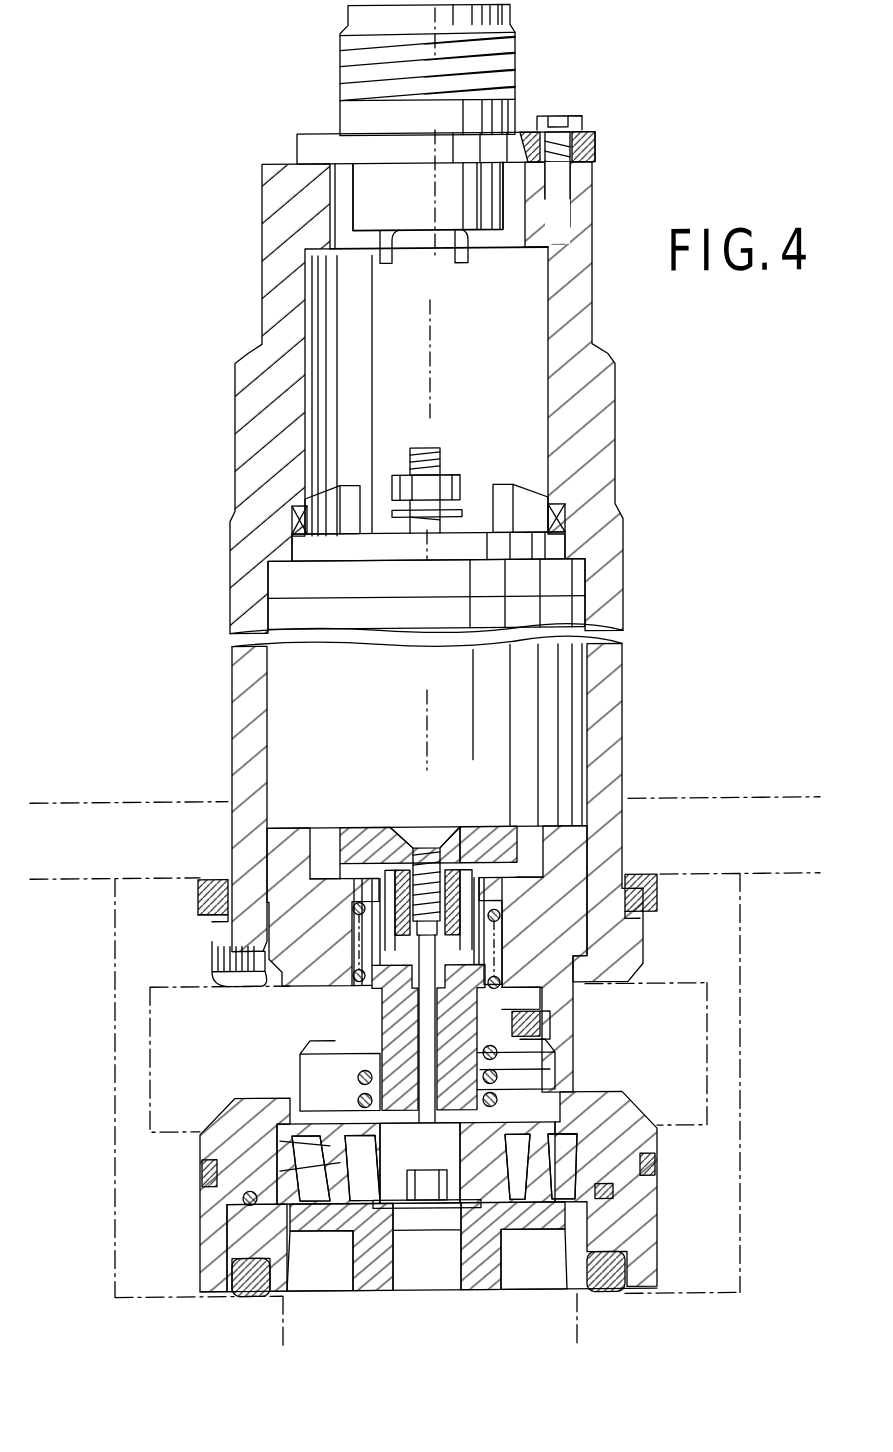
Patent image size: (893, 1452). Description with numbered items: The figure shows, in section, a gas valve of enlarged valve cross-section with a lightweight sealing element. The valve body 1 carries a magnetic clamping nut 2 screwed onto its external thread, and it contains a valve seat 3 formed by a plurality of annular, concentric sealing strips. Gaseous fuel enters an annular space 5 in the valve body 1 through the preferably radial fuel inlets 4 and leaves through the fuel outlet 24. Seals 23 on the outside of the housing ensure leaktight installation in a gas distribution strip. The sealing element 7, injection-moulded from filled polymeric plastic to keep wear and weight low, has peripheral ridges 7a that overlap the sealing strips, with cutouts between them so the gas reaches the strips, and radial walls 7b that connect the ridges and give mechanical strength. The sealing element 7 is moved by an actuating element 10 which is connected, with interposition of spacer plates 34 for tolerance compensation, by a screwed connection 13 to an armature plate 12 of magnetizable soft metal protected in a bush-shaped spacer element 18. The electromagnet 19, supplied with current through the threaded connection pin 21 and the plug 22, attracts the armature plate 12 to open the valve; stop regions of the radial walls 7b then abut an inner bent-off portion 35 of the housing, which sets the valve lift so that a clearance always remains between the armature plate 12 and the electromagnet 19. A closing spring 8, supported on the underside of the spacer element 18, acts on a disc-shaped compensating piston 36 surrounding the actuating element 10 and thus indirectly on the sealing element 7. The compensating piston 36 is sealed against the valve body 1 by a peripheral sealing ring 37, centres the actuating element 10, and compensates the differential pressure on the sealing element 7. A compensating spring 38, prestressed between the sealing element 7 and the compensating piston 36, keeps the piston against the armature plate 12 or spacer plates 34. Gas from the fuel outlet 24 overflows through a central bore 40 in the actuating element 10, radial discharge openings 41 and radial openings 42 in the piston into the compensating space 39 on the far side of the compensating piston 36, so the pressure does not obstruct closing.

The valve body 1 is at (640, 1220).
The magnetic clamping nut 2 is at (615, 460).
The valve seat 3 is at (375, 1285).
The fuel inlets 4 is at (295, 1062).
The annular space 5 is at (530, 1077).
The sealing element 7 is at (480, 1137).
The peripheral ridges 7a is at (280, 1170).
The radial walls 7b is at (320, 1143).
The closing spring 8 is at (500, 917).
The actuating element 10 is at (395, 1195).
The armature plate 12 is at (355, 848).
The screwed connection 13 is at (425, 848).
The spacer element 18 is at (285, 850).
The electromagnet 19 is at (262, 612).
The threaded connection pin 21 is at (444, 462).
The plug 22 is at (510, 42).
The seals 23 is at (640, 872).
The fuel outlet 24 is at (442, 1285).
The spacer plates 34 is at (478, 850).
The inner bent-off portion 35 is at (295, 1098).
The compensating piston 36 is at (520, 1000).
The peripheral sealing ring 37 is at (542, 1030).
The compensating spring 38 is at (362, 1098).
The compensating space 39 is at (353, 914).
The central bore 40 is at (420, 1200).
The radial discharge openings 41 is at (356, 970).
The radial openings 42 is at (455, 950).